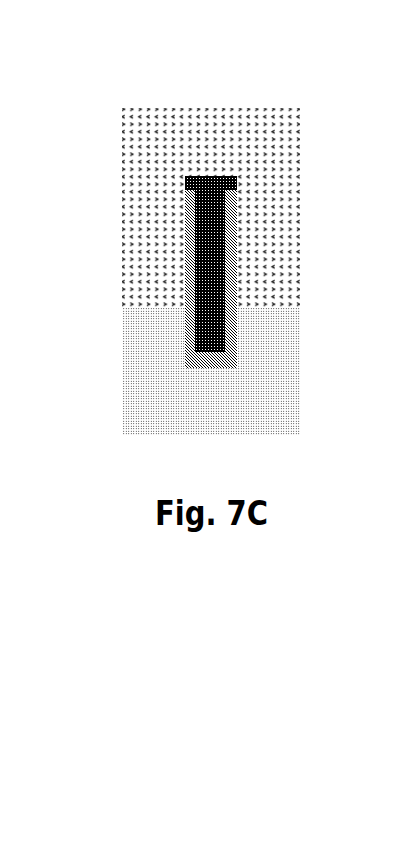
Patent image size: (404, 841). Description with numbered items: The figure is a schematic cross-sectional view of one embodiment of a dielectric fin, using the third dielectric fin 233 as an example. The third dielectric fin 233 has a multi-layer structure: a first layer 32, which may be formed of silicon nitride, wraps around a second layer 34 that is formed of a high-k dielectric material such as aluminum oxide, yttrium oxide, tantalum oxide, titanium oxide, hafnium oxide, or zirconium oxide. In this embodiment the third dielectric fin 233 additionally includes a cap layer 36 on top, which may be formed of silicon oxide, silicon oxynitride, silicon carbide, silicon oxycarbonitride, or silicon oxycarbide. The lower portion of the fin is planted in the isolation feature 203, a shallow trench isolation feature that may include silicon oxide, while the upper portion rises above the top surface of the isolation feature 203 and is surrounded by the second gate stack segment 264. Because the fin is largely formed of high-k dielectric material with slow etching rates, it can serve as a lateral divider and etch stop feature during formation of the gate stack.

The second gate stack segment 264 is at (215, 125).
The third dielectric fin 233 is at (209, 231).
The cap layer 36 is at (235, 181).
The second layer 34 is at (210, 243).
The first layer 32 is at (233, 298).
The isolation feature 203 is at (148, 400).